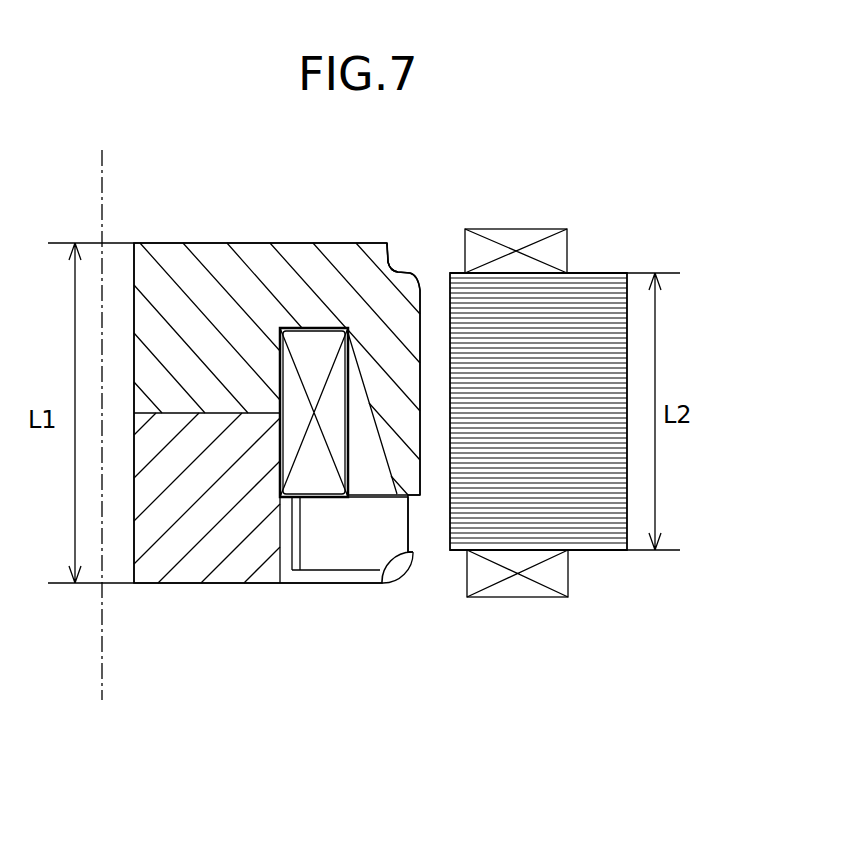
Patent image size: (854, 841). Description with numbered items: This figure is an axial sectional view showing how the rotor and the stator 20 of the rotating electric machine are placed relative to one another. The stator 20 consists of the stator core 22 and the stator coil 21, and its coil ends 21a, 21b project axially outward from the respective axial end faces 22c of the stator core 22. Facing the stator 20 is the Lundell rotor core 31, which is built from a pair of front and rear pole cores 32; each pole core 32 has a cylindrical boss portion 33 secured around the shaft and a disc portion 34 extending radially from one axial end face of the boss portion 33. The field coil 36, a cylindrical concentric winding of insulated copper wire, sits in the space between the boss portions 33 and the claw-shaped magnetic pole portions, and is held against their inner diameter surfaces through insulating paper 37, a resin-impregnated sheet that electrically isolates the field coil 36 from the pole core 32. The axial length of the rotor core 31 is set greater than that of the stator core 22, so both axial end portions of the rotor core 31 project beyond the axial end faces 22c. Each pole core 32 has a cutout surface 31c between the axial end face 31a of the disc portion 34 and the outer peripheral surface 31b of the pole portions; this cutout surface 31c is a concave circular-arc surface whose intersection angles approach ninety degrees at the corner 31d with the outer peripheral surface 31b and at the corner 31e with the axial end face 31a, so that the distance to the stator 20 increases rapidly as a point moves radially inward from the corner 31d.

The stator 20 is at (585, 403).
The stator coil 21 is at (557, 403).
The coil end 21a is at (521, 238).
The coil end 21b is at (526, 588).
The stator core 22 is at (604, 259).
The axial end face of the stator core 22c is at (618, 273).
The Lundell rotor core 31 is at (321, 410).
The axial end face of the disc portion 31a is at (336, 243).
The outer peripheral surface 31b is at (421, 340).
The cutout surface 31c is at (400, 250).
The corner 31d is at (421, 283).
The corner 31e is at (393, 262).
The pole core 32 is at (176, 231).
The boss portion 33 is at (203, 287).
The disc portion 34 is at (308, 276).
The field coil 36 is at (277, 540).
The insulating paper 37 is at (313, 472).